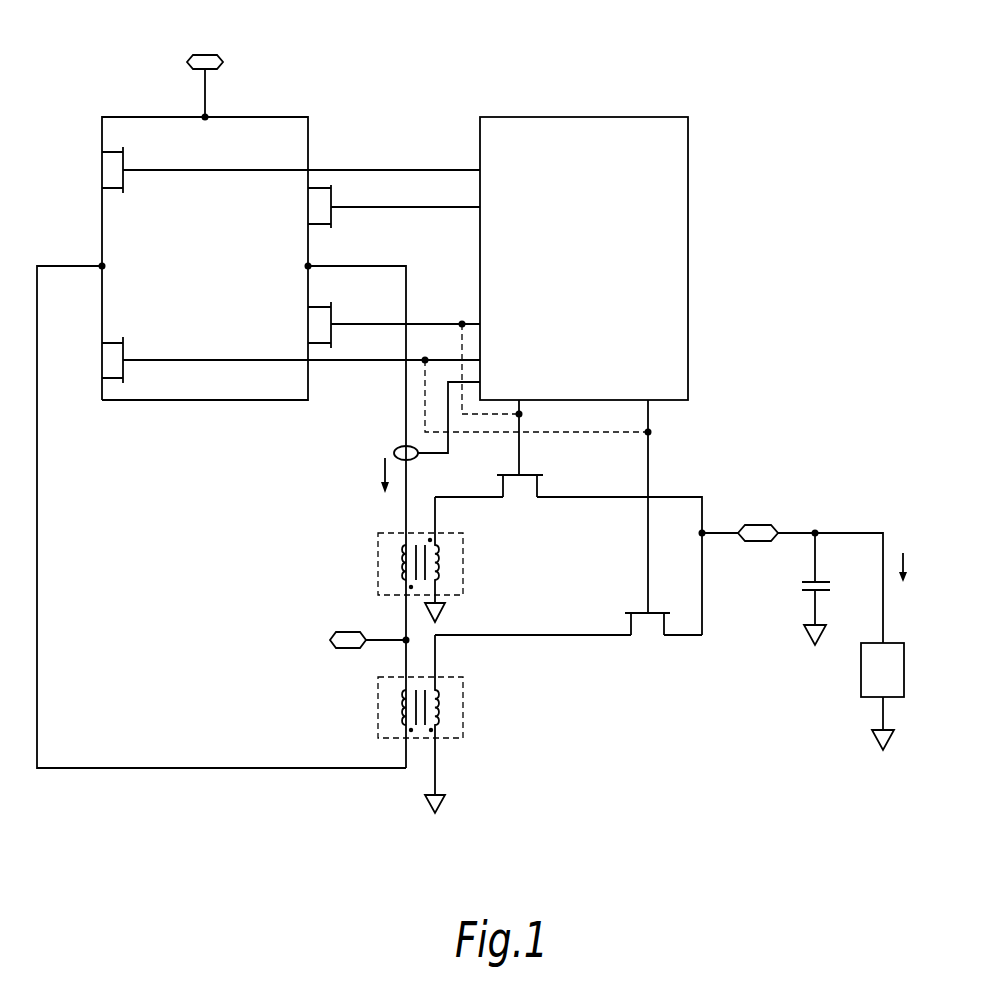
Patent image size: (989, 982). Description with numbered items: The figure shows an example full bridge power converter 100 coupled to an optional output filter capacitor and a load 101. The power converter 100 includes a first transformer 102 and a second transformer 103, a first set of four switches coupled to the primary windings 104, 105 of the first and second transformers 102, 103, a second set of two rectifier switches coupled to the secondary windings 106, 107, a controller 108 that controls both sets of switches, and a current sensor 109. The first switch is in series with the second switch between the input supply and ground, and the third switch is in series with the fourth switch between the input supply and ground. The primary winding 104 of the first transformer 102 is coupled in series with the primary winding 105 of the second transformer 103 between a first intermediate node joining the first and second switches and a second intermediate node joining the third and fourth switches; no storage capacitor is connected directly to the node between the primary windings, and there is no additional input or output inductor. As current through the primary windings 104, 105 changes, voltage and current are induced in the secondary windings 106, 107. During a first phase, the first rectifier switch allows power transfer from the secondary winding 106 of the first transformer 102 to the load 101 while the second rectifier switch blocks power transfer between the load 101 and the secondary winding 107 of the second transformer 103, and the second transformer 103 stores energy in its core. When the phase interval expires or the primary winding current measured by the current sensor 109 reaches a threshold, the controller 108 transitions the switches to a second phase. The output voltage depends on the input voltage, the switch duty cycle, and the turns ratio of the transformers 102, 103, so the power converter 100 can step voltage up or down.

The power converter 100 is at (800, 44).
The load 101 is at (904, 660).
The first transformer 102 is at (470, 541).
The second transformer 103 is at (470, 684).
The primary winding of the first transformer 104 is at (401, 562).
The primary winding of the second transformer 105 is at (401, 705).
The secondary winding of the first transformer 106 is at (439, 562).
The secondary winding of the second transformer 107 is at (439, 705).
The controller 108 is at (585, 117).
The current sensor 109 is at (397, 447).